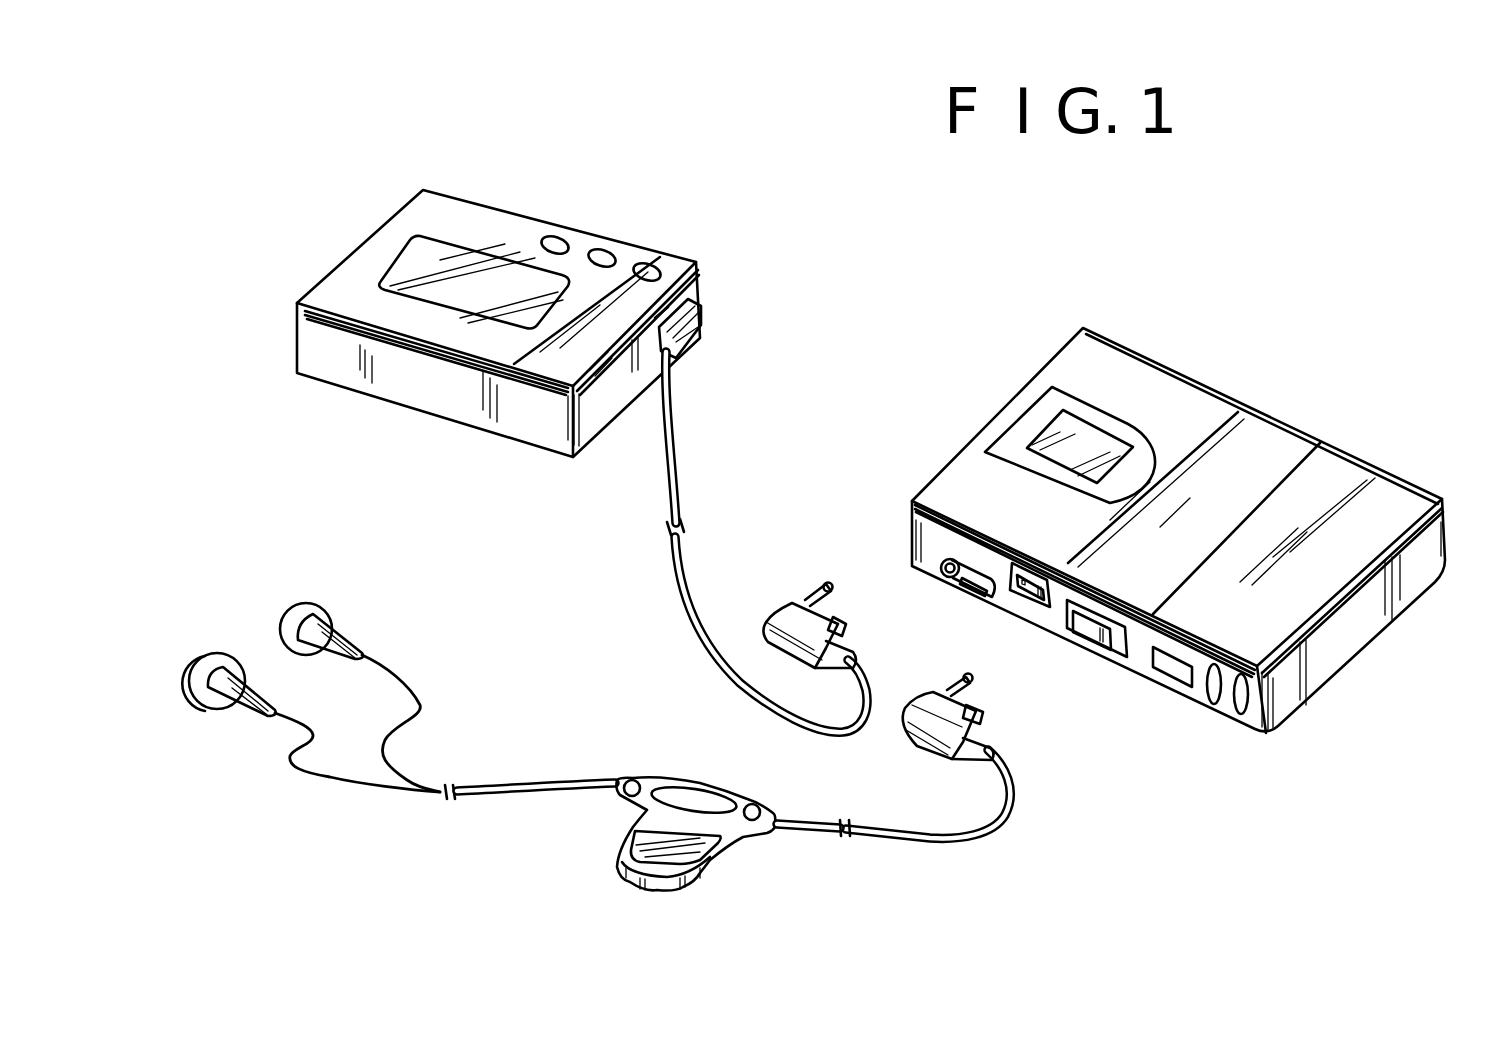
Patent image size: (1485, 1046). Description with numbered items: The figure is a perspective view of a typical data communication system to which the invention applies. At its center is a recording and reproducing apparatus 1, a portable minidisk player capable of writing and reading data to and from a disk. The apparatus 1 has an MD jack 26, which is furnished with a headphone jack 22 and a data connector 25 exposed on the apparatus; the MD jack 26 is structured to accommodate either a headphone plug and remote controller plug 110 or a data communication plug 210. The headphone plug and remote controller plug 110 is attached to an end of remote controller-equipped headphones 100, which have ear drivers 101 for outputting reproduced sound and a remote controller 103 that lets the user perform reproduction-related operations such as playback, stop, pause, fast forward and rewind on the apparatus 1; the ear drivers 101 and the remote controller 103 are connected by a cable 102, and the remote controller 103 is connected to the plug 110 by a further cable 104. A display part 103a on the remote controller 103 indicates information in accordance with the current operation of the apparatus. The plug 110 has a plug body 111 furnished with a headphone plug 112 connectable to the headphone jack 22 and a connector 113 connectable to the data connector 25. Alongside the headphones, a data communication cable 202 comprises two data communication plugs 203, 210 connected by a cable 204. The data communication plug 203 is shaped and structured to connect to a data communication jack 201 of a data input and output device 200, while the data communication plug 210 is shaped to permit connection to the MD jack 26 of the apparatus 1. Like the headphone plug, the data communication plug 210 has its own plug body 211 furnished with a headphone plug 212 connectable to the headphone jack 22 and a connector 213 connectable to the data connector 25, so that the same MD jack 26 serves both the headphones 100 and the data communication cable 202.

The recording and reproducing apparatus 1 is at (1152, 513).
The headphone jack 22 is at (945, 578).
The data connector 25 is at (971, 590).
The MD jack 26 is at (932, 574).
The remote controller-equipped headphones 100 is at (641, 717).
The ear drivers 101 is at (285, 615).
The cable 102 is at (517, 794).
The remote controller 103 is at (650, 835).
The display part 103a is at (603, 850).
The cable 104 is at (1005, 827).
The headphone plug and remote controller plug 110 is at (971, 725).
The plug body 111 is at (917, 743).
The headphone plug 112 is at (968, 678).
The connector 113 is at (983, 712).
The data input and output device 200 is at (580, 178).
The data communication jack 201 is at (677, 303).
The data communication cable 202 is at (673, 423).
The data communication plug 203 is at (705, 320).
The cable 204 is at (664, 488).
The data communication plug 210 is at (763, 600).
The plug body 211 is at (777, 653).
The headphone plug 212 is at (810, 600).
The connector 213 is at (833, 617).